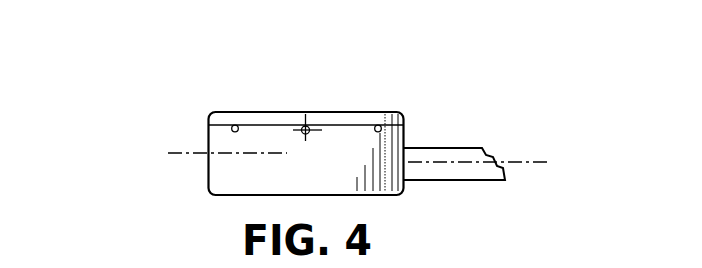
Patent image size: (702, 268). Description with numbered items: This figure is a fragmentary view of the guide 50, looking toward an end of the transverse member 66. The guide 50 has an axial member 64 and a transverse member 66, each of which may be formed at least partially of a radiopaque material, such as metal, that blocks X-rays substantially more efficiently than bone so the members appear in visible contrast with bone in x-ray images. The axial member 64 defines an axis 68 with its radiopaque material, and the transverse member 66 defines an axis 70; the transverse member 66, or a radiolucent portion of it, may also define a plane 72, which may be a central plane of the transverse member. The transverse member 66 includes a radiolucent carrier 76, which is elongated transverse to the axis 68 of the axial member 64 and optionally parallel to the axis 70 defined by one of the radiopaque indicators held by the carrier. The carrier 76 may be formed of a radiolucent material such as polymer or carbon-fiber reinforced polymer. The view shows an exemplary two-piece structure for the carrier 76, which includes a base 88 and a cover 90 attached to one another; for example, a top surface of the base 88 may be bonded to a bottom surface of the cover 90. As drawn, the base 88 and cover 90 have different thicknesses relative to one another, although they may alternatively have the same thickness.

The guide 50 is at (223, 73).
The transverse member 66 is at (268, 100).
The axis 70 is at (306, 121).
The radiolucent carrier 76 is at (385, 115).
The axial member 64 is at (441, 148).
The axis 68 is at (518, 162).
The plane 72 is at (190, 153).
The base 88 is at (208, 174).
The cover 90 is at (226, 112).